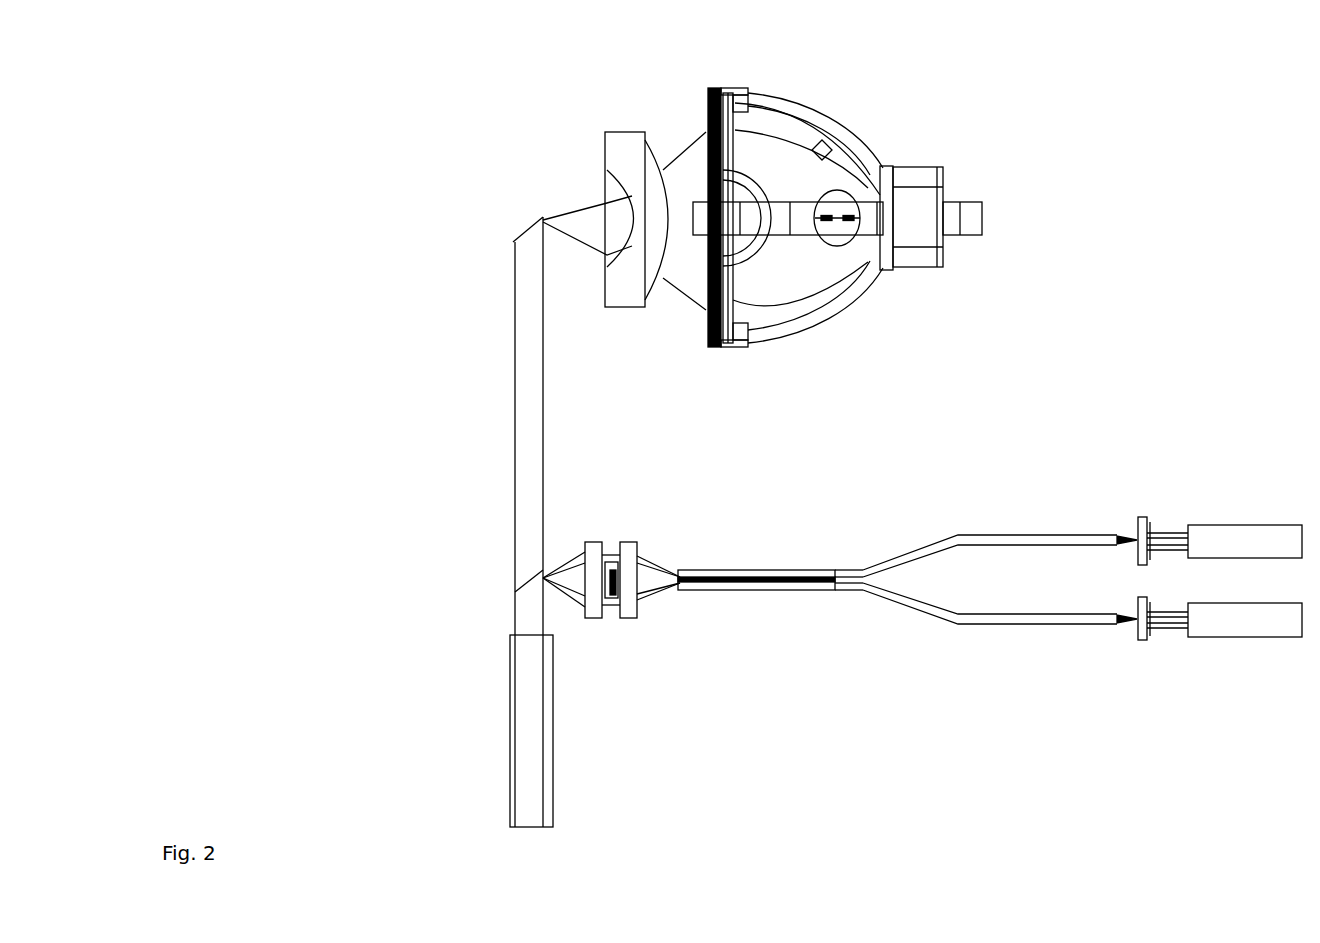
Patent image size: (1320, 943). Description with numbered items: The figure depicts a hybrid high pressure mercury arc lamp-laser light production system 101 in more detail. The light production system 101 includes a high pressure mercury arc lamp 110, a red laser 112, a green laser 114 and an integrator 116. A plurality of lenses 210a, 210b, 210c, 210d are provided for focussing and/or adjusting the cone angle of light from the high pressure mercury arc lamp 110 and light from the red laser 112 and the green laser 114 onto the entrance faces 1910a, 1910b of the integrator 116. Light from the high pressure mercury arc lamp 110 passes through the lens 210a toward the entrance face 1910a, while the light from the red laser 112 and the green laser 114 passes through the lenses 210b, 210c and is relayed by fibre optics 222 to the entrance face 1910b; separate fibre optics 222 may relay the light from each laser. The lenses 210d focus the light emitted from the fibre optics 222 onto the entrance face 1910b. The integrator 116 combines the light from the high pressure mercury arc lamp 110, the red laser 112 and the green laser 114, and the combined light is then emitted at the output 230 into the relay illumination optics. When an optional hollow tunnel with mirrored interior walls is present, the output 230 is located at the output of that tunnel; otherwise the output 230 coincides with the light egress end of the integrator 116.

The light production system 101 is at (305, 92).
The high pressure mercury arc lamp 110 is at (929, 110).
The lens 210a is at (620, 132).
The entrance face 1910a is at (545, 200).
The integrator 116 is at (491, 354).
The entrance face 1910b is at (554, 609).
The output 230 is at (492, 816).
The lenses 210d is at (624, 524).
The fibre optics 222 is at (732, 575).
The lens 210b is at (1138, 523).
The lens 210c is at (1140, 637).
The red laser 112 is at (1255, 525).
The green laser 114 is at (1203, 633).